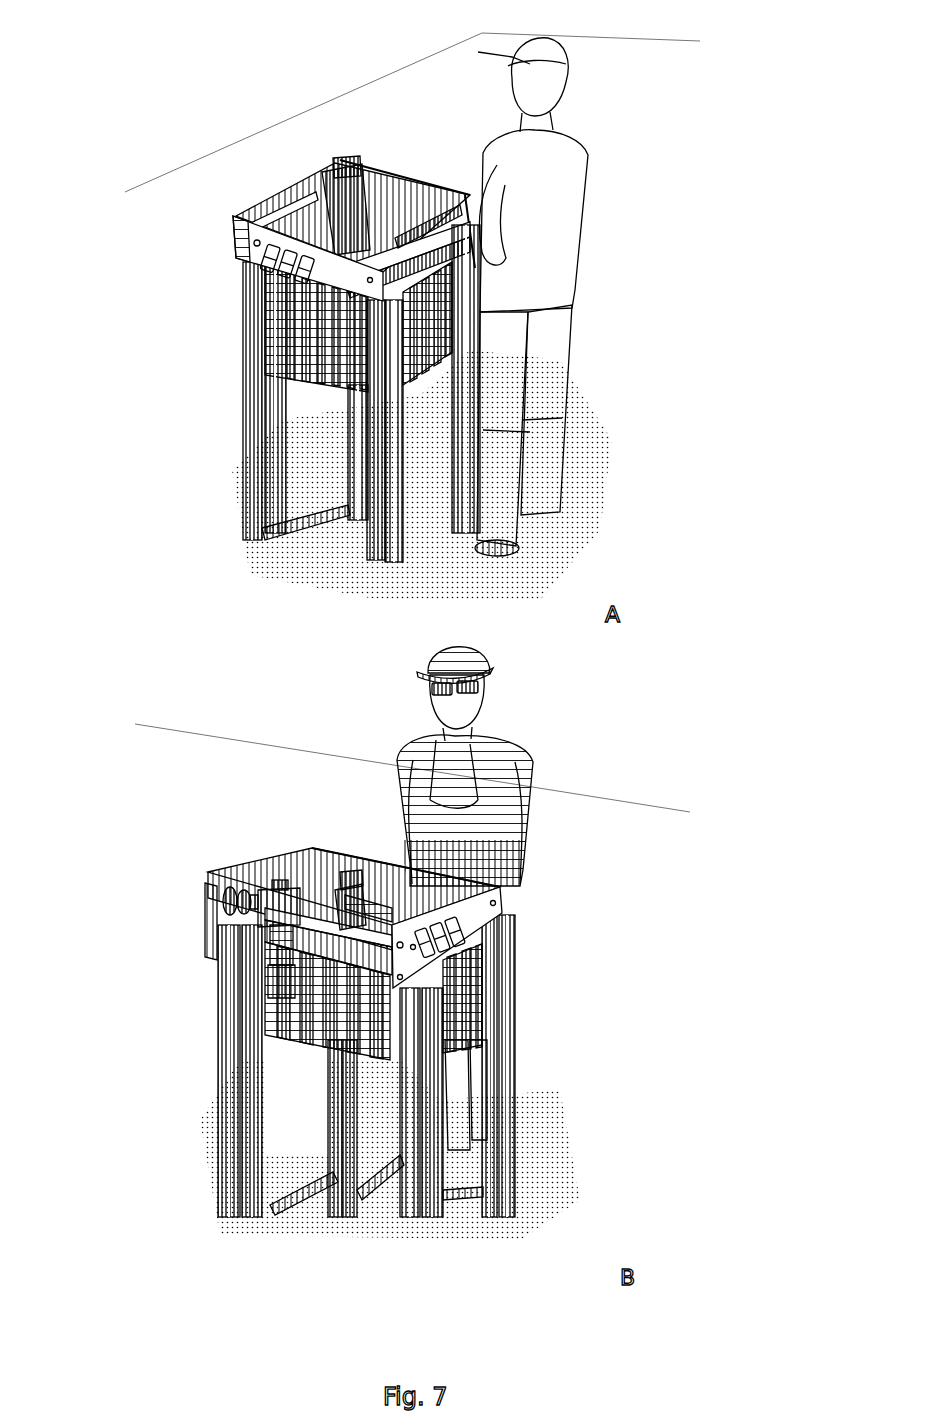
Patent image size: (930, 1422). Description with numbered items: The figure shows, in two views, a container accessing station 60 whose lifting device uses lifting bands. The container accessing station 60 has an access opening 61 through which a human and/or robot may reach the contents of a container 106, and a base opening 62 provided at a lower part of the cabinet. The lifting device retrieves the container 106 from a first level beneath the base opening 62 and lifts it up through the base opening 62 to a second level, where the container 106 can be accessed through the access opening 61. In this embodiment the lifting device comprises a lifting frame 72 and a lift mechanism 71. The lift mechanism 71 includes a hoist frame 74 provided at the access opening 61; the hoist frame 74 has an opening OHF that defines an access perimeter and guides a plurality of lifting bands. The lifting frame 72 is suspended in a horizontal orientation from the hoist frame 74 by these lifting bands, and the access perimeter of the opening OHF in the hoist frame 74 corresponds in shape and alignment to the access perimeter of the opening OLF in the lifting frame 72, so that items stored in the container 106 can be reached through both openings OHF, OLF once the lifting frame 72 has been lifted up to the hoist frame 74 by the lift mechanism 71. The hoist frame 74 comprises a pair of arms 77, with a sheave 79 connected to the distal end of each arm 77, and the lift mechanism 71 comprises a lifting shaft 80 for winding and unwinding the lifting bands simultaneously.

The container accessing station 60 is at (260, 412).
The access opening 61 is at (357, 250).
The base opening 62 is at (318, 517).
The lift mechanism 71 is at (201, 887).
The lifting frame 72 is at (412, 223).
The hoist frame 74 is at (248, 252).
The arms 77 is at (247, 238).
The sheave 79 is at (232, 883).
The lifting shaft 80 is at (290, 223).
The container 106 is at (298, 340).
The opening in the hoist frame OHF is at (437, 203).
The opening in the lifting frame OLF is at (435, 233).